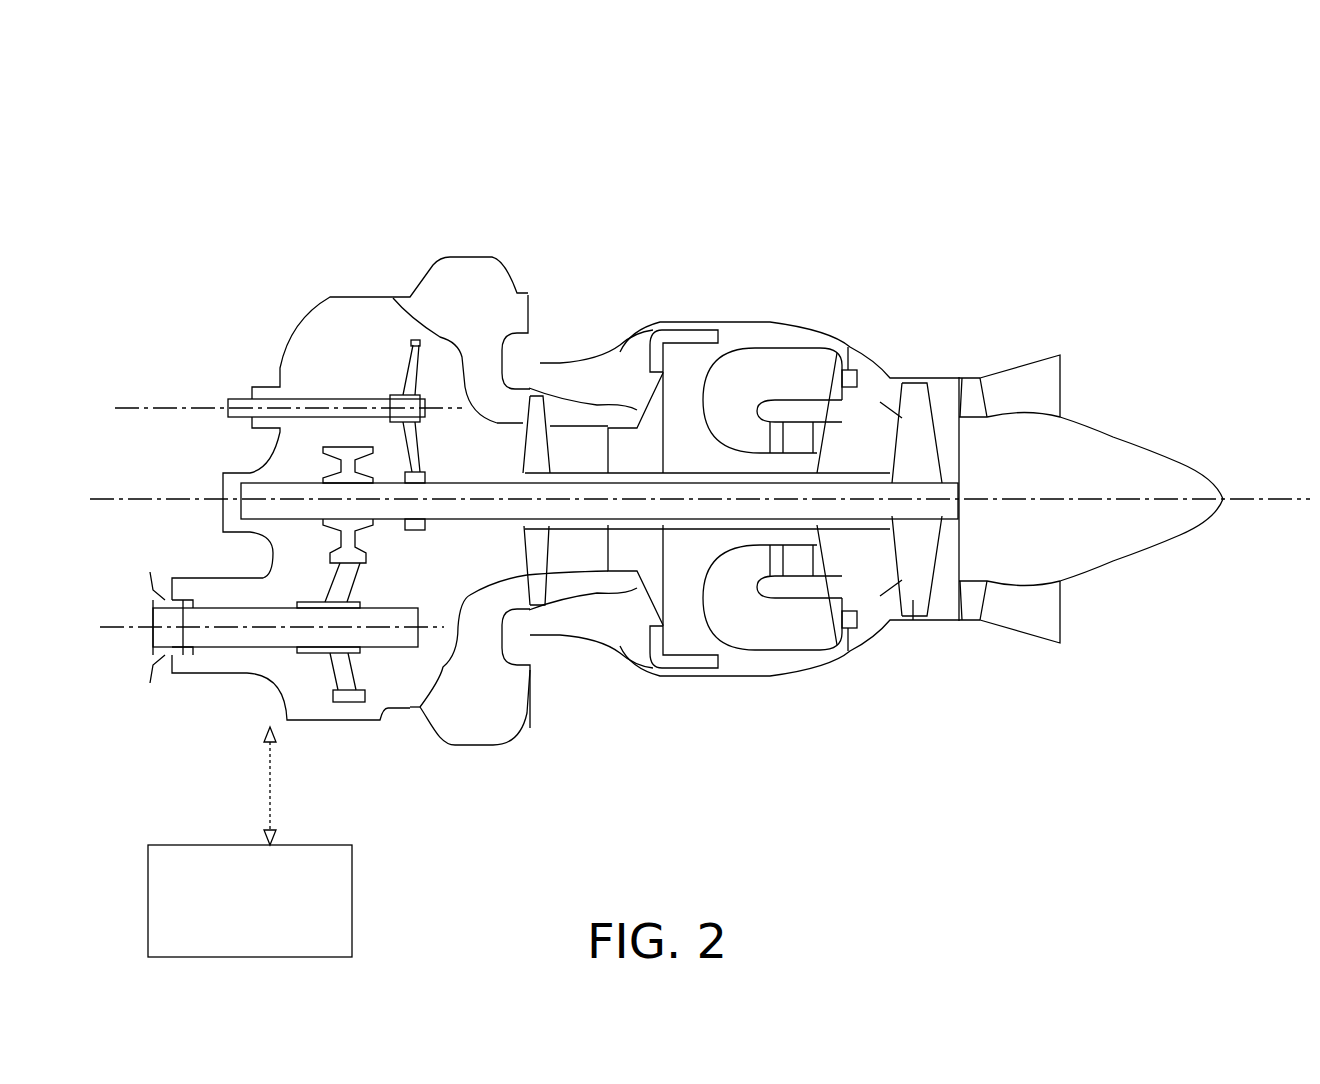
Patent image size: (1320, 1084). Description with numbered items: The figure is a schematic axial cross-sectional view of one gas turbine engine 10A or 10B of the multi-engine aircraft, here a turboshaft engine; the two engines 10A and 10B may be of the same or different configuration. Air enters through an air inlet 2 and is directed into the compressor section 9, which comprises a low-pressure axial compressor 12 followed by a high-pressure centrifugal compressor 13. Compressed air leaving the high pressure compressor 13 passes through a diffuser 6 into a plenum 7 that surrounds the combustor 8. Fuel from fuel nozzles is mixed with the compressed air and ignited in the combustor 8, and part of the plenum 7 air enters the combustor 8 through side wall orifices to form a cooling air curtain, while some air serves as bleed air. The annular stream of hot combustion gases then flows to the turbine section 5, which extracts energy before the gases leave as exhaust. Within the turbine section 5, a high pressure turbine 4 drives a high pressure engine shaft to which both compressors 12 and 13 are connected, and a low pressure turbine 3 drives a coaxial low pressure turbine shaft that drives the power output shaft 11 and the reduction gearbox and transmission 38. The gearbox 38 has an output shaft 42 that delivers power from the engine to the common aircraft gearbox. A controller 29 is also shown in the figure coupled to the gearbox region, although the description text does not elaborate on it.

The air inlet 2 is at (470, 747).
The low pressure turbine 3 is at (915, 602).
The high pressure turbine 4 is at (818, 533).
The turbine section 5 is at (878, 565).
The diffuser 6 is at (687, 330).
The plenum 7 is at (760, 668).
The combustor 8 is at (777, 367).
The compressor section 9 is at (717, 728).
The gas turbine engine 10A is at (921, 174).
The gas turbine engine 10B is at (732, 447).
The power output shaft 11 is at (455, 482).
The low-pressure axial compressor 12 is at (542, 395).
The high-pressure centrifugal compressor 13 is at (635, 447).
The controller 29 is at (353, 872).
The reduction gearbox and transmission 38 is at (357, 360).
The output shaft 42 is at (213, 637).